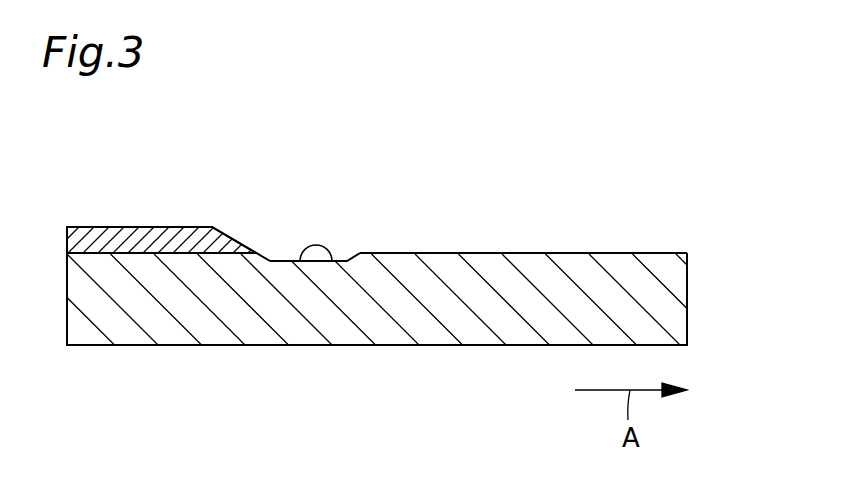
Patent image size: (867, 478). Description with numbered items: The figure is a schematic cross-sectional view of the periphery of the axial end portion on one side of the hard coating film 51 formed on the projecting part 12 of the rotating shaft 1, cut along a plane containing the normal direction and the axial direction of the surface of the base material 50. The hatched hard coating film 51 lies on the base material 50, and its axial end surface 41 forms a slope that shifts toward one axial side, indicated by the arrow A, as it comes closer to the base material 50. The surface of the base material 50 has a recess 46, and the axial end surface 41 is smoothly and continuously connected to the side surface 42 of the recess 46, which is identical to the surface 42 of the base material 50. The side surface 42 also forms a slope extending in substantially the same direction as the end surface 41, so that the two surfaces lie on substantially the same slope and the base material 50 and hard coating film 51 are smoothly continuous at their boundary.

The rotating shaft 1 is at (517, 260).
The projecting part 12 is at (586, 255).
The axial end surface 41 is at (225, 243).
The surface of the base material 42 is at (270, 261).
The recess 46 is at (332, 261).
The base material 50 is at (178, 327).
The hard coating film 51 is at (167, 237).